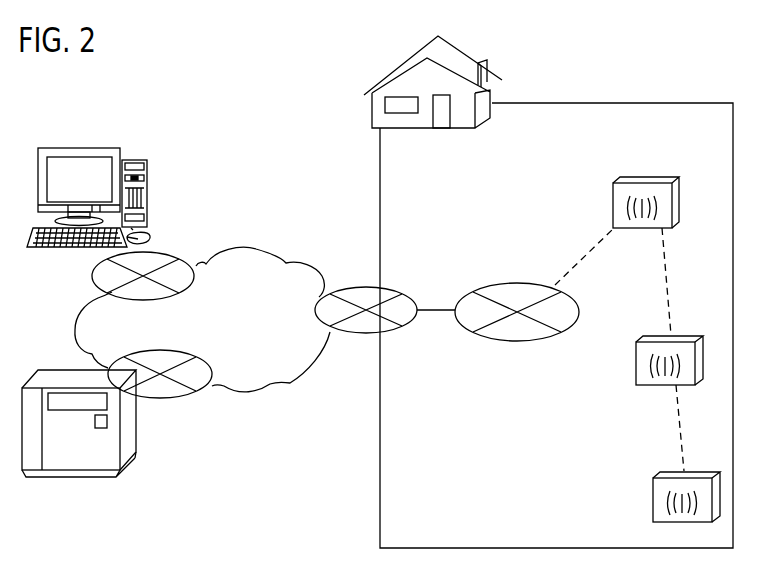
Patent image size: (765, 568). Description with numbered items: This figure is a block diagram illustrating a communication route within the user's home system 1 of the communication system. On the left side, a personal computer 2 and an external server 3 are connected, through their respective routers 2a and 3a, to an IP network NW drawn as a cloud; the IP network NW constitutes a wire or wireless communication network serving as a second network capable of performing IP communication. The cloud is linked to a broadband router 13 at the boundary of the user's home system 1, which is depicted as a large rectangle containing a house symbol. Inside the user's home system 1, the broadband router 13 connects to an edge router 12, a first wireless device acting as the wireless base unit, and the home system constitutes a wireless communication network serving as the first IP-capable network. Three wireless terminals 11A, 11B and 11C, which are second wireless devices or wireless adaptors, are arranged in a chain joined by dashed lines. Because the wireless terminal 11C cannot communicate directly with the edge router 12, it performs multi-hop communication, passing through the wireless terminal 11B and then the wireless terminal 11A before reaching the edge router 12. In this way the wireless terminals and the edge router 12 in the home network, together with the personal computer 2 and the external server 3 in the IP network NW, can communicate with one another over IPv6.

The user's home system 1 is at (672, 103).
The personal computer 2 is at (82, 148).
The router 2a is at (176, 252).
The external server 3 is at (95, 478).
The router 3a is at (178, 398).
The wireless terminal 11A is at (613, 200).
The wireless terminal 11B is at (636, 365).
The wireless terminal 11C is at (653, 497).
The edge router 12 is at (510, 342).
The broadband router 13 is at (368, 334).
The IP network NW is at (256, 248).